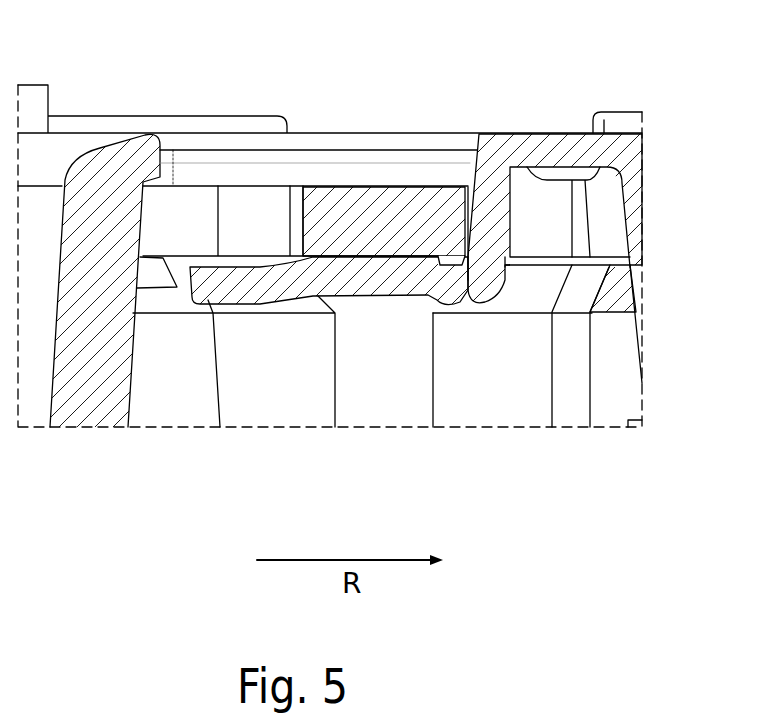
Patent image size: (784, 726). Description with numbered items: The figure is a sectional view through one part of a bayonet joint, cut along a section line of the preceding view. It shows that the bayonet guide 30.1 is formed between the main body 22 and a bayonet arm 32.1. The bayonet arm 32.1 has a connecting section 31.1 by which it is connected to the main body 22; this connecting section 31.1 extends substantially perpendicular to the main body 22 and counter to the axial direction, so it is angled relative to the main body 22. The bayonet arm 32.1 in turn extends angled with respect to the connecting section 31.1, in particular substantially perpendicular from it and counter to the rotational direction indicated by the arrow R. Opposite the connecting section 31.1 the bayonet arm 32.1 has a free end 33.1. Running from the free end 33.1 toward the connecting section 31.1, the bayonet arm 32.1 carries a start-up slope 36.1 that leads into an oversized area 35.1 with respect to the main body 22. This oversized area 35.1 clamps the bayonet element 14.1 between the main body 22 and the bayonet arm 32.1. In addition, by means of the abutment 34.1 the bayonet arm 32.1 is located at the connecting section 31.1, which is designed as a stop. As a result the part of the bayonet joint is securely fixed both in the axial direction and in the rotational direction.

The start-up slope 36.1 is at (280, 207).
The bayonet guide 30.1 is at (271, 262).
The bayonet element 14.1 is at (345, 213).
The main body 22 is at (460, 160).
The connecting section 31.1 is at (493, 212).
The free end 33.1 is at (190, 292).
The bayonet arm 32.1 is at (222, 303).
The oversized area 35.1 is at (392, 303).
The abutment 34.1 is at (392, 303).